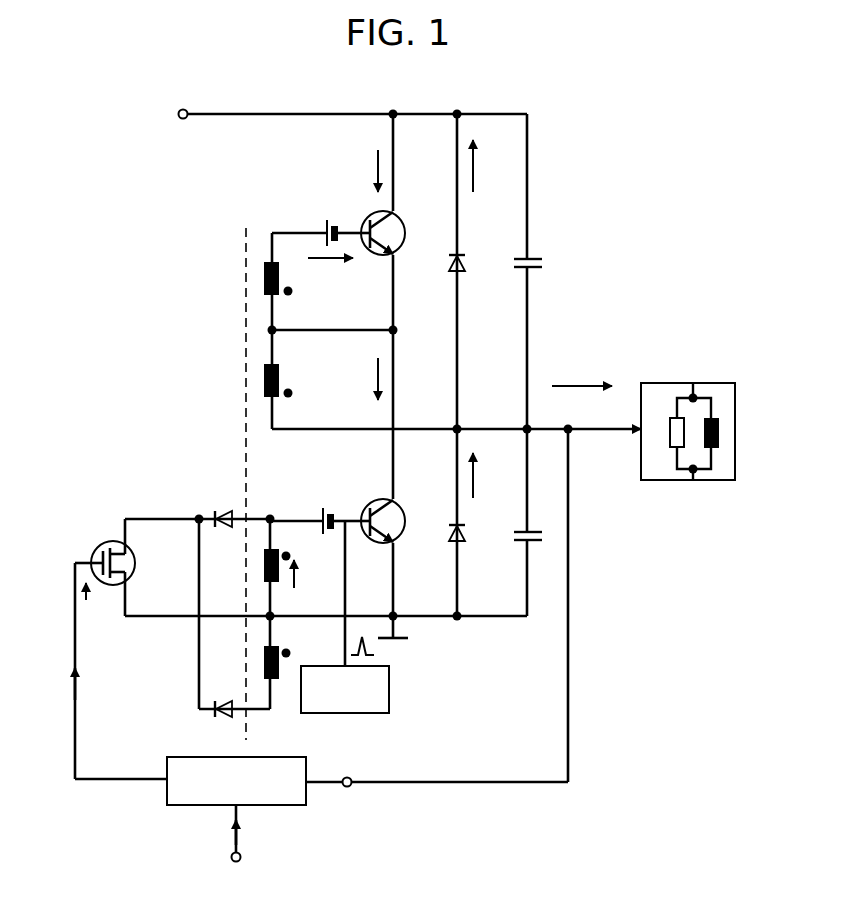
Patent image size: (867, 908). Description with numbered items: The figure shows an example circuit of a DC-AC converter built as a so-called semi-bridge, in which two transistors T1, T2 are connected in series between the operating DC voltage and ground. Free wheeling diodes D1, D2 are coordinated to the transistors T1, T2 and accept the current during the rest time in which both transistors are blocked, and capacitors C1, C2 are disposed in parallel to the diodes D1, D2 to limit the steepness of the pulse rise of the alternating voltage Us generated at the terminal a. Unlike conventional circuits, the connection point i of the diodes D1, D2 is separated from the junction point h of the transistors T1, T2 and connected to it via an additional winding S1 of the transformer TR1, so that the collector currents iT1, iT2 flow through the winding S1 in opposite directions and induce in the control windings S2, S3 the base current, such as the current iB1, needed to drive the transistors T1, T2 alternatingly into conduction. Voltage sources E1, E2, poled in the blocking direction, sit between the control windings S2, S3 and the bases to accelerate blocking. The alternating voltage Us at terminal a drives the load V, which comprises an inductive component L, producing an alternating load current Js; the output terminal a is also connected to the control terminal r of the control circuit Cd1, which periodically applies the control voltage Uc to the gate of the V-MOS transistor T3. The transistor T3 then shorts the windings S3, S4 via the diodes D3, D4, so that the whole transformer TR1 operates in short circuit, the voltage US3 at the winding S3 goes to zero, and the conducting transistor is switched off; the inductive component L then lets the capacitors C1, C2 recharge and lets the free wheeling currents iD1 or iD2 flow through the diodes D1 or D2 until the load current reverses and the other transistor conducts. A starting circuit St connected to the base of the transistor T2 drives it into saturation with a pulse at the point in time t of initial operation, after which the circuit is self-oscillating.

The first transistor T1 is at (391, 227).
The second transistor T2 is at (391, 514).
The electronic switch (V-MOS transistor) T3 is at (113, 548).
The first voltage source E1 is at (316, 220).
The second voltage source E2 is at (315, 507).
The additional winding S1 is at (257, 381).
The first control winding S2 is at (257, 279).
The second control winding S3 is at (256, 565).
The fourth winding S4 is at (256, 662).
The transformer TR1 is at (246, 471).
The first free wheeling diode D1 is at (470, 265).
The second free wheeling diode D2 is at (470, 535).
The third diode D3 is at (224, 507).
The fourth diode D4 is at (224, 721).
The first capacitor C1 is at (541, 266).
The second capacitor C2 is at (541, 539).
The starting circuit St is at (357, 675).
The control circuit Cd1 is at (236, 781).
The load V is at (688, 419).
The inductive component L is at (728, 433).
The control terminal r is at (347, 772).
The point in time t is at (236, 872).
The connection point of the transistors h is at (403, 330).
The connection point of the free wheeling diodes i is at (462, 418).
The output terminal a is at (568, 418).
The alternating load current Js is at (582, 374).
The output voltage Us is at (598, 452).
The control voltage Uc is at (99, 606).
The voltage at winding S3 US3 is at (313, 574).
The collector current of transistor T1 iT1 is at (361, 171).
The collector current of transistor T2 iT2 is at (361, 379).
The base current of transistor T1 iB1 is at (330, 271).
The current through diode D1 iD1 is at (491, 166).
The current through diode D2 iD2 is at (491, 475).